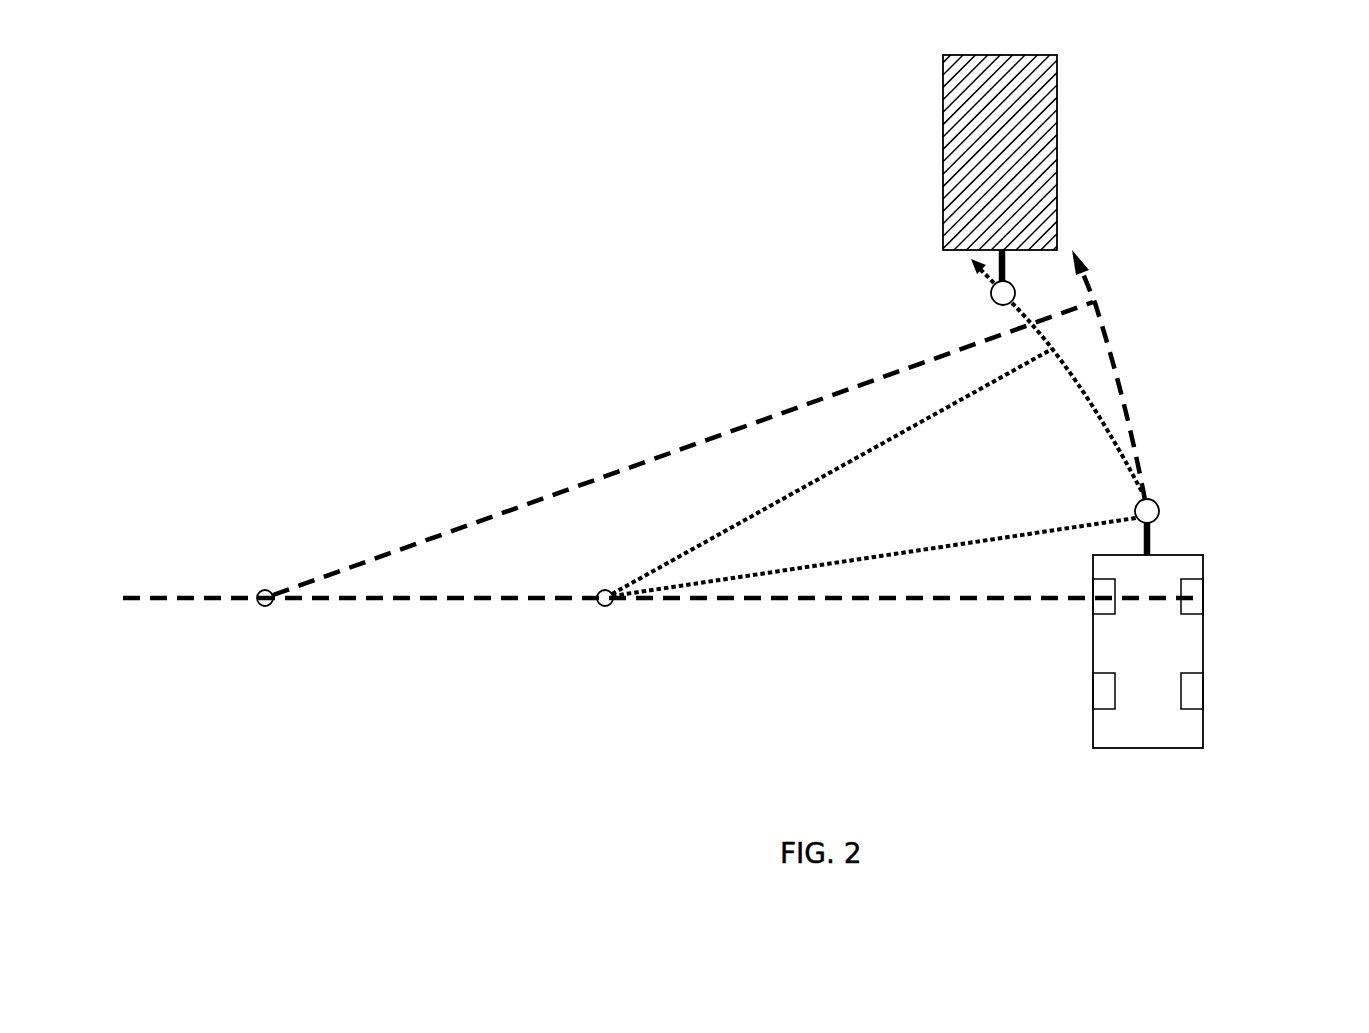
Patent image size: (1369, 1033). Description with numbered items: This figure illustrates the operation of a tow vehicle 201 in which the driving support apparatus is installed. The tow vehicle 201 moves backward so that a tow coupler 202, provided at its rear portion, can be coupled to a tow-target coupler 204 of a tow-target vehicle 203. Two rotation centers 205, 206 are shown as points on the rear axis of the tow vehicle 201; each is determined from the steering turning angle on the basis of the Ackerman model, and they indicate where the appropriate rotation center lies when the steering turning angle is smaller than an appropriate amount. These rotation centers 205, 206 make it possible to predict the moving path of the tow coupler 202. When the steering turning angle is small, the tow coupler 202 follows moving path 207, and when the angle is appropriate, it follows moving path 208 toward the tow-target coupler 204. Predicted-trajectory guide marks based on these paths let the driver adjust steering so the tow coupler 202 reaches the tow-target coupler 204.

The tow vehicle 201 is at (1203, 637).
The tow coupler 202 is at (1156, 501).
The tow-target vehicle 203 is at (943, 160).
The tow-target coupler 204 is at (991, 293).
The rotation center 205 is at (262, 590).
The rotation center 206 is at (600, 591).
The moving path 207 is at (1128, 403).
The moving path 208 is at (1092, 400).